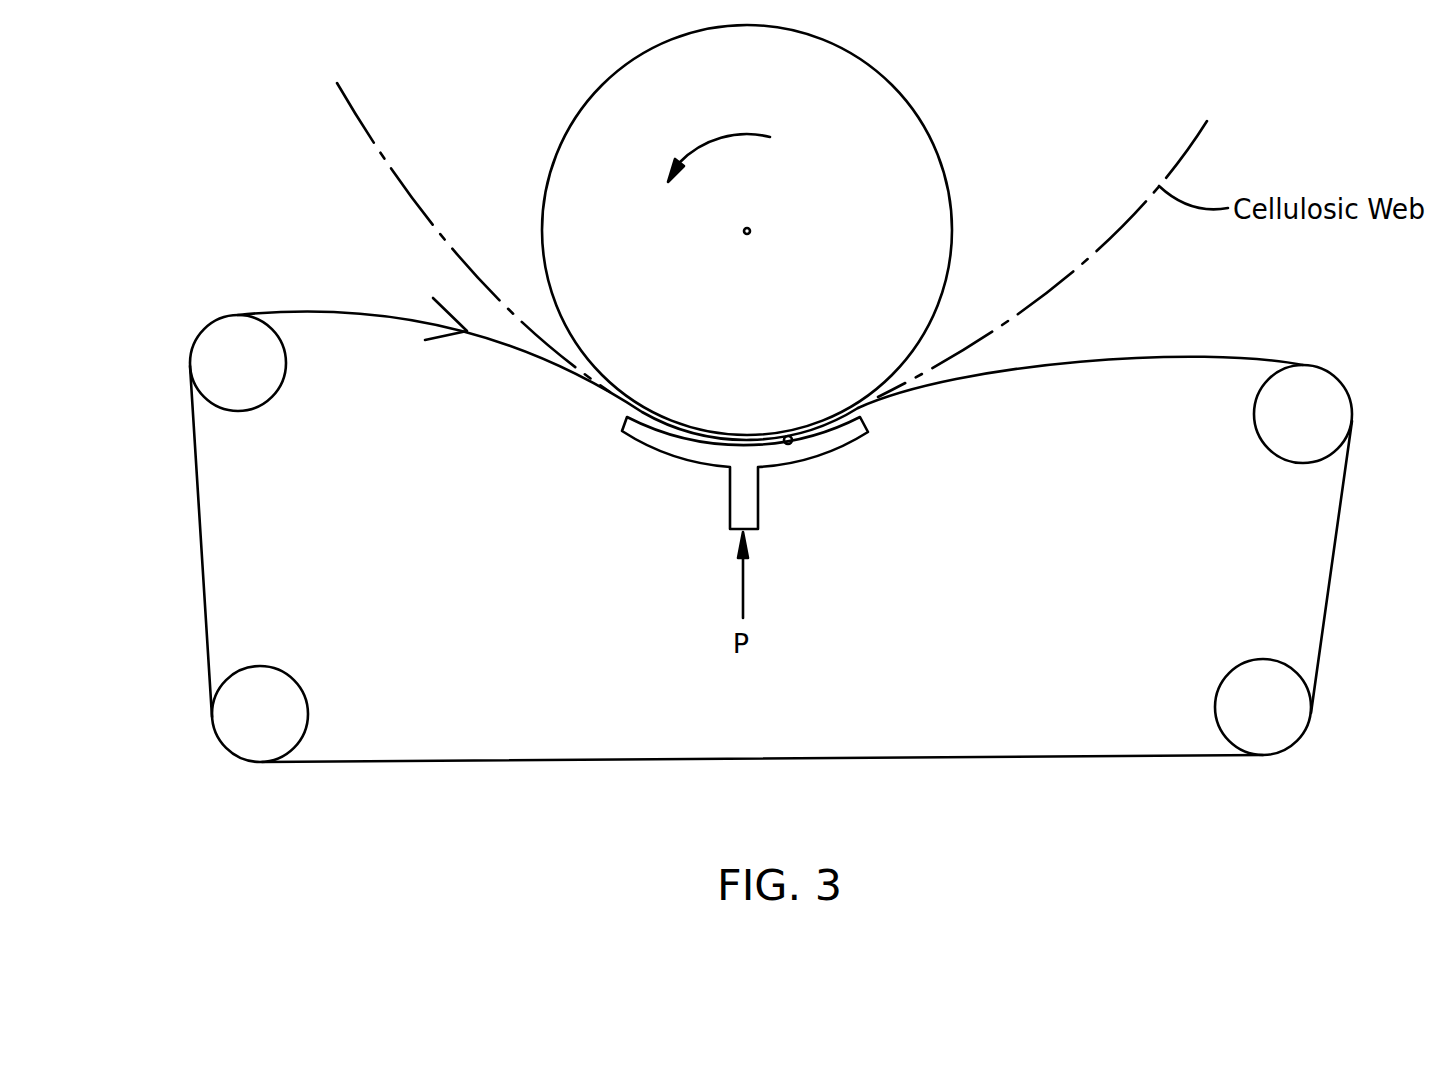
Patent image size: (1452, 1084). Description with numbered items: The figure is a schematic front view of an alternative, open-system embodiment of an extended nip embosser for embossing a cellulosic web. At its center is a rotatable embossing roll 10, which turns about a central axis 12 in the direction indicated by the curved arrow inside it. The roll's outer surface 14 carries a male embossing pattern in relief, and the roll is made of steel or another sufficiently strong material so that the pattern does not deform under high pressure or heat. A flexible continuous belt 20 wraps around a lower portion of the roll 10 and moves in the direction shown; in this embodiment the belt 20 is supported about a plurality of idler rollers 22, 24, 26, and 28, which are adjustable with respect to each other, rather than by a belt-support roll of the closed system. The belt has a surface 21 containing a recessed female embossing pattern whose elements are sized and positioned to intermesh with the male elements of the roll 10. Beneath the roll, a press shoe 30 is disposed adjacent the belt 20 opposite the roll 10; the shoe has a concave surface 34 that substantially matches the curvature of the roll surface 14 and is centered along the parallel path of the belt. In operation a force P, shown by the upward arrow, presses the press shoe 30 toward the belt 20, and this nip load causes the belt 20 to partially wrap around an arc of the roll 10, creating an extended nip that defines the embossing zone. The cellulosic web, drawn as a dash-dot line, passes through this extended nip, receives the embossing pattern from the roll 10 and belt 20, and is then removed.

The embossing roll 10 is at (878, 121).
The central axis 12 is at (747, 231).
The roll outer surface 14 is at (587, 106).
The flexible continuous belt 20 is at (362, 310).
The belt surface 21 is at (1100, 353).
The idler roller 22 is at (287, 372).
The idler roller 24 is at (1348, 395).
The idler roller 26 is at (1312, 715).
The idler roller 28 is at (222, 747).
The press shoe 30 is at (830, 453).
The concave surface 34 is at (789, 444).